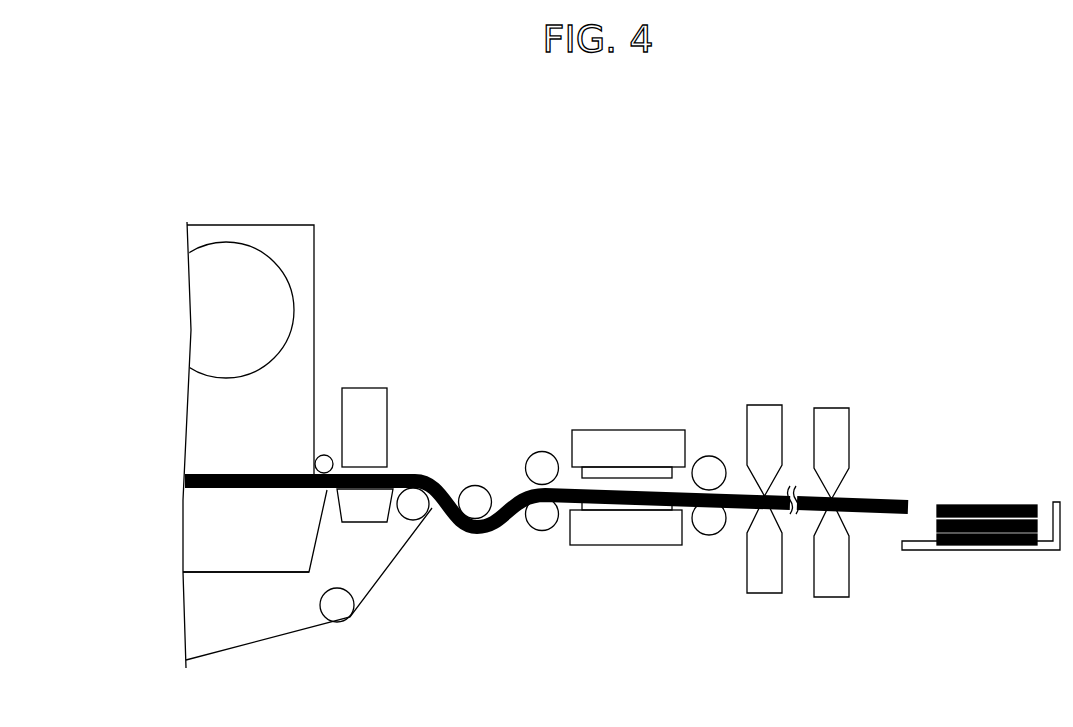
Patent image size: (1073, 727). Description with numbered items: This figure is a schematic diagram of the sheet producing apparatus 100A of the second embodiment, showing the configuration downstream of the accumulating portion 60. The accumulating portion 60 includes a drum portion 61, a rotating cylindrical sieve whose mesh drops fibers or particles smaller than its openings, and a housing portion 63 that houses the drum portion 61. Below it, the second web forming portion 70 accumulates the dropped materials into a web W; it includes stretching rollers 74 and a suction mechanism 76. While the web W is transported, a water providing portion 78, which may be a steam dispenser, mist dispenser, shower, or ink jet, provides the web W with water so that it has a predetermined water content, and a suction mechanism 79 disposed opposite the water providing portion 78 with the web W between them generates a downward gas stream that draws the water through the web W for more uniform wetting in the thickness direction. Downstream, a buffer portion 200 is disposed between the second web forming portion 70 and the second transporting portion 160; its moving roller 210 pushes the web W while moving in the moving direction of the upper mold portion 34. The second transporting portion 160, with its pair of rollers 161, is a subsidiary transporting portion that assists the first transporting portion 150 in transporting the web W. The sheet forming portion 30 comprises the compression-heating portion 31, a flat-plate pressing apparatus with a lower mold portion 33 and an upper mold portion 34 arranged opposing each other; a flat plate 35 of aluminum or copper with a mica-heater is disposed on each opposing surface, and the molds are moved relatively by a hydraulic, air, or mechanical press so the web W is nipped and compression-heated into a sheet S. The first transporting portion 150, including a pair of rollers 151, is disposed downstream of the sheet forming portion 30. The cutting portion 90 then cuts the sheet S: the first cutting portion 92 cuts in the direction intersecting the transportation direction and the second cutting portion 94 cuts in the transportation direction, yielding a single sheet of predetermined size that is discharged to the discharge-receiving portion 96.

The sheet producing apparatus 100A is at (708, 150).
The accumulating portion 60 is at (320, 212).
The drum portion 61 is at (224, 257).
The housing portion 63 is at (288, 227).
The second web forming portion 70 is at (388, 637).
The stretching rollers 74 is at (415, 521).
The suction mechanism 76 is at (229, 566).
The water providing portion 78 is at (362, 394).
The suction mechanism 79 is at (360, 510).
The web W is at (423, 474).
The buffer portion 200 is at (470, 418).
The moving roller 210 is at (480, 487).
The second transporting portion 160 is at (537, 383).
The pair of rollers 161 is at (543, 458).
The sheet forming portion 30 is at (682, 293).
The compression-heating portion 31 is at (632, 362).
The lower mold portion 33 is at (660, 538).
The upper mold portion 34 is at (660, 437).
The flat plate 35 is at (620, 470).
The first transporting portion 150 is at (713, 390).
The pair of rollers 151 is at (709, 457).
The cutting portion 90 is at (860, 332).
The first cutting portion 92 is at (770, 397).
The second cutting portion 94 is at (837, 400).
The sheet S is at (1005, 505).
The discharge-receiving portion 96 is at (985, 550).